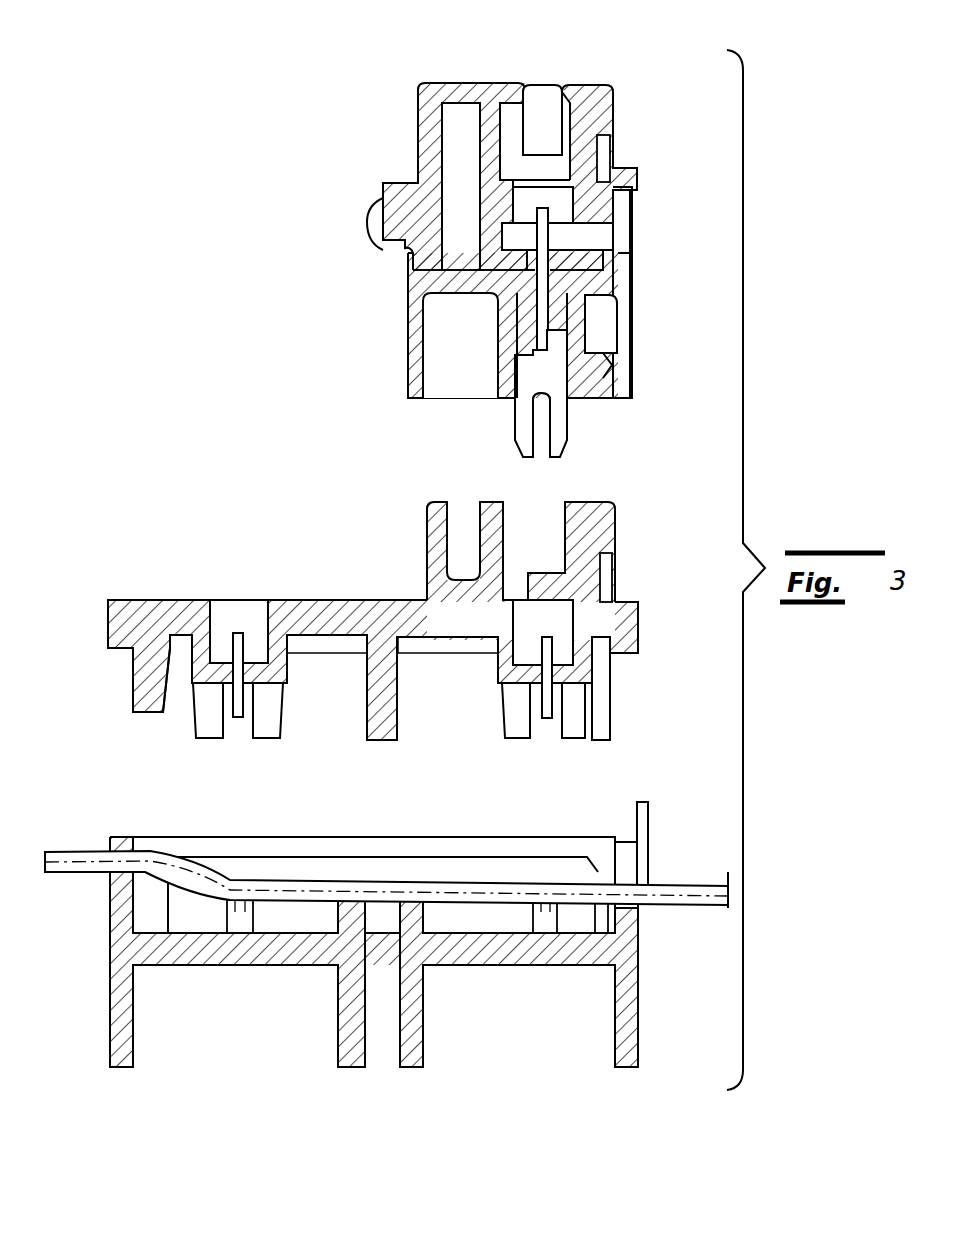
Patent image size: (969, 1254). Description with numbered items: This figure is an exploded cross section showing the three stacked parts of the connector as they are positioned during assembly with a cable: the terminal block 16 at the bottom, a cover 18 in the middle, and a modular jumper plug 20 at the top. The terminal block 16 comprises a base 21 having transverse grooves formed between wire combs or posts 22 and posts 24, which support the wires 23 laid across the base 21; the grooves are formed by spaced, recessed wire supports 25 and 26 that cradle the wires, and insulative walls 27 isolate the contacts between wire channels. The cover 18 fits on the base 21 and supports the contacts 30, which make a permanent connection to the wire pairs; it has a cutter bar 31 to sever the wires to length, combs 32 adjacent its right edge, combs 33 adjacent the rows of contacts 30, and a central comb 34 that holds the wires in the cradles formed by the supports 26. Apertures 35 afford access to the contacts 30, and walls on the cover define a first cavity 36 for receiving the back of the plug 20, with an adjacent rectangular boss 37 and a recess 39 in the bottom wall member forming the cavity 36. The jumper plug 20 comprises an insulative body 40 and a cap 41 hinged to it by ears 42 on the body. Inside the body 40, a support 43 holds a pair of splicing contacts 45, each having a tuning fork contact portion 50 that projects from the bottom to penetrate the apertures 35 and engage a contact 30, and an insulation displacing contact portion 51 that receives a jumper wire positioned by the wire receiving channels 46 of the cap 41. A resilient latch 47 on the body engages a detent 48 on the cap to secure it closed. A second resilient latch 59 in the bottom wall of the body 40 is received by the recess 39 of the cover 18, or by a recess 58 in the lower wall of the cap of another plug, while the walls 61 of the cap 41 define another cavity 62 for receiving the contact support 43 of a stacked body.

The terminal block 16 is at (104, 1006).
The cover 18 is at (135, 597).
The modular jumper plug 20 is at (298, 130).
The base 21 is at (112, 905).
The wire combs or posts 22 is at (120, 840).
The wires 23 is at (676, 907).
The posts 24 is at (631, 870).
The wire supports 25 is at (228, 924).
The wire supports 26 is at (400, 878).
The insulative walls 27 is at (230, 857).
The contacts 30 is at (540, 652).
The cutter bar 31 is at (143, 701).
The combs 32 is at (612, 722).
The combs 33 is at (208, 739).
The central comb 34 is at (385, 739).
The apertures 35 is at (256, 600).
The first cavity 36 is at (585, 512).
The rectangular boss 37 is at (427, 519).
The recess 39 is at (607, 556).
The insulative body 40 is at (400, 340).
The cap 41 is at (418, 117).
The ears 42 is at (367, 226).
The support 43 is at (500, 356).
The splicing contact 45 is at (512, 418).
The wire receiving channels 46 is at (625, 233).
The resilient latch 47 is at (640, 176).
The detent 48 is at (642, 203).
The tuning fork contact portion 50 is at (566, 425).
The wire insulation displacing contact portion 51 is at (535, 300).
The recess 58 is at (602, 150).
The second resilient latch 59 is at (632, 342).
The walls 61 is at (466, 84).
The cavity 62 is at (576, 95).